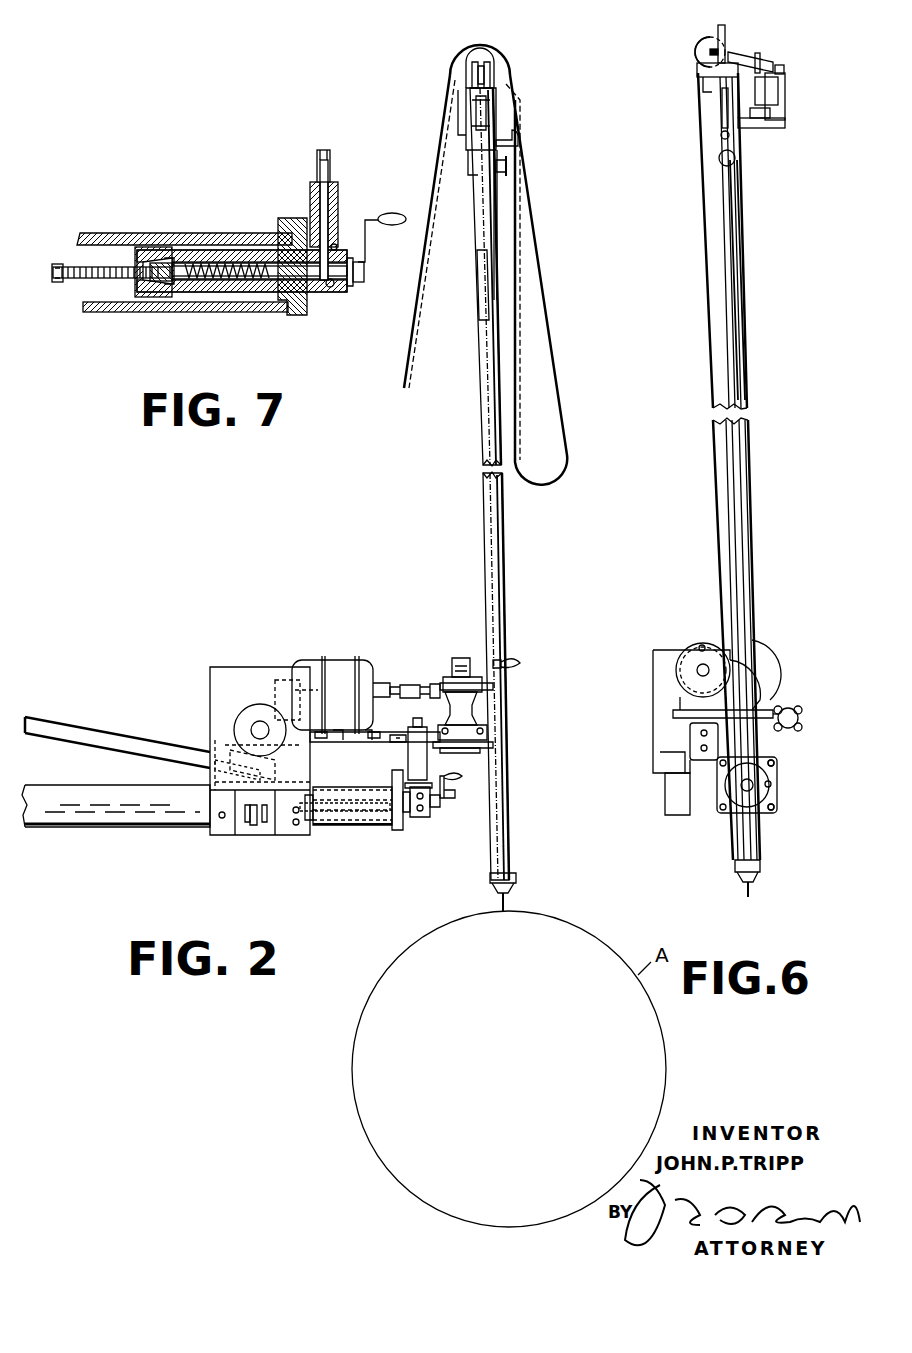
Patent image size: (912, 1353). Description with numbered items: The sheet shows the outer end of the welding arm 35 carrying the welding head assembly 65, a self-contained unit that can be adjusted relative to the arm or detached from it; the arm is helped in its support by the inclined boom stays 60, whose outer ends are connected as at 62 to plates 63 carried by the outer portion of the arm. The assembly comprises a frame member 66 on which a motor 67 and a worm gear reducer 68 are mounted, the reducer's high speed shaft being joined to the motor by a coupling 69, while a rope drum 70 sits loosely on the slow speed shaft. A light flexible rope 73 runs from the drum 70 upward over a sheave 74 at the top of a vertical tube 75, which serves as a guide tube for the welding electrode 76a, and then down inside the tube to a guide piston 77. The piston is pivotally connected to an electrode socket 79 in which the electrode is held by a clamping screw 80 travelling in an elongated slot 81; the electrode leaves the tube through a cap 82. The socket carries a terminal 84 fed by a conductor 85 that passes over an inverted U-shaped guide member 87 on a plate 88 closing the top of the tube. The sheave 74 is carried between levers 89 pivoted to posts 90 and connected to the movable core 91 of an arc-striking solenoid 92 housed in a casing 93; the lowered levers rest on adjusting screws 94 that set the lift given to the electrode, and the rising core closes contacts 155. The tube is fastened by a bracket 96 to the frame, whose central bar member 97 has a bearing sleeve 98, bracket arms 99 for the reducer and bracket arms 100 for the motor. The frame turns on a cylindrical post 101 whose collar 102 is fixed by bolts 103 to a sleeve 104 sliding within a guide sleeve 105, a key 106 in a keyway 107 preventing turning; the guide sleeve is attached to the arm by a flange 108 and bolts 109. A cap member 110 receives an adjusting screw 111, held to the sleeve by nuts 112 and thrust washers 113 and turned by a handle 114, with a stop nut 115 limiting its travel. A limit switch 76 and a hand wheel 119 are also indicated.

In FIG. 2, the welding arm 35 is at (85, 832).
In FIG. 7, the welding arm 35 is at (148, 233).
In FIG. 2, the inclined boom stays 60 is at (86, 737).
In FIG. 2, the connection of stays to plates 62 is at (215, 766).
In FIG. 2, the plates 63 is at (220, 750).
In FIG. 2, the welding head assembly 65 is at (396, 626).
In FIG. 2, the frame member 66 is at (470, 756).
In FIG. 2, the motor 67 is at (340, 657).
In FIG. 6, the motor 67 is at (762, 654).
In FIG. 2, the worm gear reducer 68 is at (460, 658).
In FIG. 2, the coupling 69 is at (409, 685).
In FIG. 2, the rope drum 70 is at (512, 666).
In FIG. 6, the rope drum 70 is at (684, 672).
In FIG. 2, the rope 73 is at (495, 538).
In FIG. 6, the rope 73 is at (712, 363).
In FIG. 2, the sheave 74 is at (497, 60).
In FIG. 6, the sheave 74 is at (696, 50).
In FIG. 2, the vertical tube 75 is at (483, 388).
In FIG. 6, the vertical tube 75 is at (750, 436).
In FIG. 2, the limit switch 76 is at (483, 258).
In FIG. 2, the welding electrode 76a is at (506, 898).
In FIG. 6, the welding electrode 76a is at (745, 888).
In FIG. 2, the guide piston 77 is at (490, 110).
In FIG. 2, the electrode socket 79 is at (478, 150).
In FIG. 2, the clamping screw 80 is at (508, 165).
In FIG. 6, the clamping screw 80 is at (736, 158).
In FIG. 2, the elongated slot 81 is at (497, 220).
In FIG. 6, the elongated slot 81 is at (725, 238).
In FIG. 2, the cap 82 is at (514, 875).
In FIG. 6, the cap 82 is at (760, 868).
In FIG. 2, the terminal 84 is at (518, 140).
In FIG. 6, the terminal 84 is at (720, 135).
In FIG. 2, the conductor 85 is at (543, 273).
In FIG. 6, the inverted U-shaped guide member 87 is at (727, 33).
In FIG. 6, the plate 88 is at (700, 80).
In FIG. 2, the levers 89 is at (470, 52).
In FIG. 6, the levers 89 is at (745, 52).
In FIG. 2, the posts 90 is at (495, 73).
In FIG. 6, the posts 90 is at (700, 62).
In FIG. 6, the movable core 91 is at (762, 64).
In FIG. 6, the arc-striking solenoid 92 is at (780, 89).
In FIG. 6, the casing 93 is at (786, 100).
In FIG. 6, the adjusting screws 94 is at (785, 70).
In FIG. 2, the bracket 96 is at (495, 750).
In FIG. 2, the central bar member 97 is at (398, 735).
In FIG. 2, the bearing sleeve 98 is at (440, 802).
In FIG. 7, the bearing sleeve 98 is at (338, 195).
In FIG. 2, the bracket arms 99 is at (440, 727).
In FIG. 2, the bracket arms 100 is at (330, 740).
In FIG. 2, the cylindrical post 101 is at (405, 748).
In FIG. 7, the cylindrical post 101 is at (330, 170).
In FIG. 2, the collar 102 is at (428, 815).
In FIG. 7, the collar 102 is at (318, 292).
In FIG. 2, the bolts 103 is at (420, 818).
In FIG. 7, the bolts 103 is at (337, 244).
In FIG. 2, the sleeve 104 is at (368, 828).
In FIG. 7, the sleeve 104 is at (190, 293).
In FIG. 2, the guide sleeve 105 is at (328, 828).
In FIG. 7, the guide sleeve 105 is at (188, 262).
In FIG. 7, the key 106 is at (225, 262).
In FIG. 7, the keyway 107 is at (256, 262).
In FIG. 2, the flange 108 is at (400, 832).
In FIG. 7, the flange 108 is at (292, 316).
In FIG. 6, the flange 108 is at (775, 765).
In FIG. 6, the bolts 109 is at (720, 815).
In FIG. 2, the cap member 110 is at (294, 830).
In FIG. 7, the cap member 110 is at (140, 286).
In FIG. 2, the adjusting screw 111 is at (348, 828).
In FIG. 7, the adjusting screw 111 is at (94, 265).
In FIG. 7, the nuts 112 is at (150, 284).
In FIG. 7, the thrust washers 113 is at (169, 256).
In FIG. 2, the handle 114 is at (462, 778).
In FIG. 6, the handle 114 is at (772, 784).
In FIG. 2, the stop nut 115 is at (245, 822).
In FIG. 7, the stop nut 115 is at (56, 284).
In FIG. 6, the hand wheel 119 is at (790, 708).
In FIG. 6, the contacts 155 is at (786, 120).